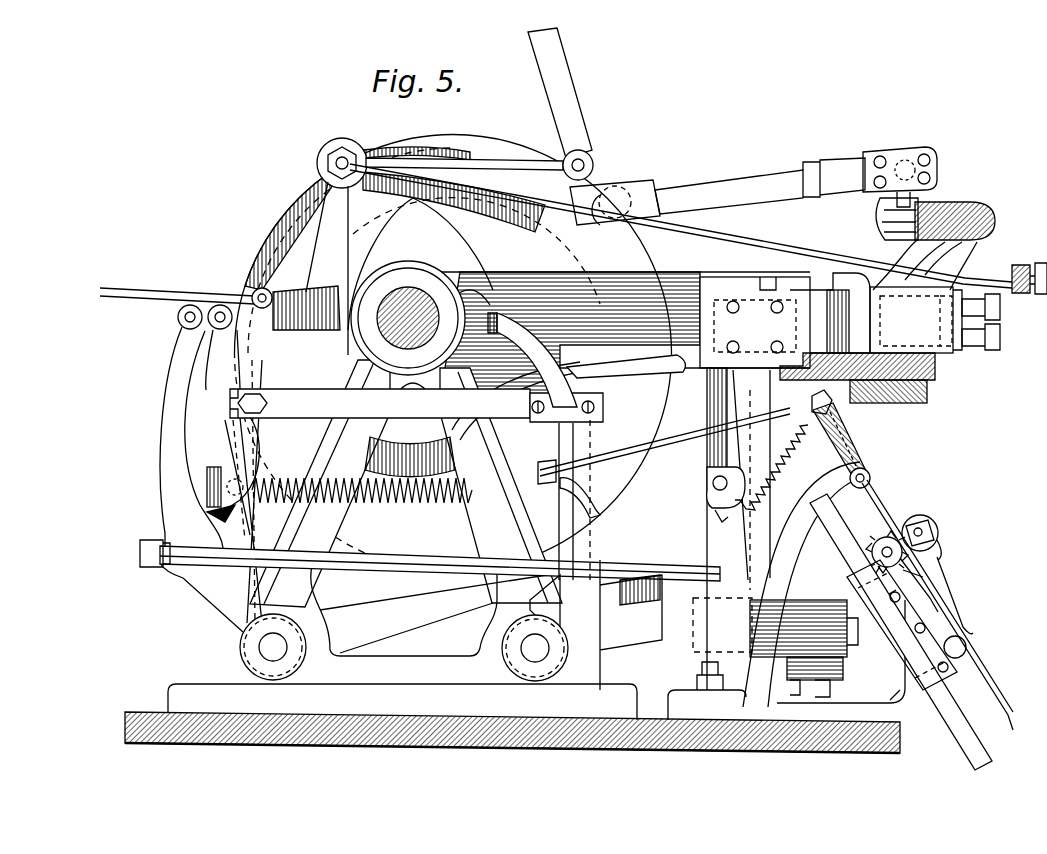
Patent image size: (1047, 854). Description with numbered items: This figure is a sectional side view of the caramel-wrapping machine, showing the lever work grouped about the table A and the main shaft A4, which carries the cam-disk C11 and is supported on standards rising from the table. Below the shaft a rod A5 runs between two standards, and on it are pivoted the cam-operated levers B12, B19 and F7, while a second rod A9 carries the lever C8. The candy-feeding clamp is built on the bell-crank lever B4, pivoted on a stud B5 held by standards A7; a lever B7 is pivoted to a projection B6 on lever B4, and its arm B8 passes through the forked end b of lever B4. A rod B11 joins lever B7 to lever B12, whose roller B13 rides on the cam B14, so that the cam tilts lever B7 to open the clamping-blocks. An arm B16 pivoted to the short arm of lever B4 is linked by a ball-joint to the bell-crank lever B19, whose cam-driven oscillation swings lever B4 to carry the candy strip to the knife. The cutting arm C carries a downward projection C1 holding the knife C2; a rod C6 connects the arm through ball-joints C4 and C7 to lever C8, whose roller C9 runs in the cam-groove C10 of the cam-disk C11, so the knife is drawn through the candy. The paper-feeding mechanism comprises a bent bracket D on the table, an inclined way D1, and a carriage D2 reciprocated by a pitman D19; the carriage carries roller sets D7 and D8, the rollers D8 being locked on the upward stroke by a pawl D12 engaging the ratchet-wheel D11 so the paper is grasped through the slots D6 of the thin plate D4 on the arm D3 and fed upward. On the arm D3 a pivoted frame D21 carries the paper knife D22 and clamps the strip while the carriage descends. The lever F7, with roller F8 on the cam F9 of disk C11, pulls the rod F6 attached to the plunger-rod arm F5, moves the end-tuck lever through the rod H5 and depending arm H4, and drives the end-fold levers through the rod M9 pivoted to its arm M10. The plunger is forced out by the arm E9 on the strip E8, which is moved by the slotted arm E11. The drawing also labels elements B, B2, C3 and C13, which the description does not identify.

The table A is at (888, 748).
The main shaft A4 is at (396, 302).
The rod A5 is at (265, 650).
The standards A7 is at (841, 684).
The rod A9 is at (532, 652).
The block B is at (930, 398).
The plate B2 is at (937, 372).
The lever B4 is at (764, 382).
The stud B5 is at (655, 662).
The projection B6 is at (710, 485).
The lever B7 is at (700, 380).
The arm B8 is at (838, 286).
The rod B11 is at (382, 574).
The lever B12 is at (165, 464).
The roller B13 is at (178, 319).
The cam B14 is at (185, 348).
The arm B16 is at (714, 342).
The lever B19 is at (426, 628).
The forked end b is at (770, 278).
The arm C is at (952, 210).
The downward projection C1 is at (966, 290).
The knife C2 is at (911, 320).
The screw C3 is at (1000, 308).
The ball-joint C4 is at (905, 163).
The rod C6 is at (755, 184).
The ball-joint C7 is at (628, 200).
The lever C8 is at (602, 257).
The roller C9 is at (622, 294).
The cam-groove C10 is at (312, 198).
The cam-disk C11 is at (477, 154).
The screw C13 is at (1000, 342).
The bracket D is at (893, 702).
The way D1 is at (946, 722).
The carriage D2 is at (924, 640).
The arm D3 is at (790, 518).
The plate D4 is at (948, 690).
The slots D6 is at (948, 604).
The rollers D7 is at (914, 522).
The rollers D8 is at (870, 553).
The ratchet-wheel D11 is at (880, 540).
The pawl D12 is at (918, 567).
The pitman D19 is at (926, 584).
The frame D21 is at (842, 440).
The knife D22 is at (812, 402).
The strip E8 is at (416, 405).
The arm E9 is at (562, 364).
The arm E11 is at (240, 464).
The arm F5 is at (1029, 268).
The rod F6 is at (776, 244).
The lever F7 is at (344, 254).
The roller F8 is at (386, 264).
The cam F9 is at (399, 221).
The depending arm H4 is at (572, 124).
The rod H5 is at (512, 158).
The rod M9 is at (213, 294).
The arm M10 is at (348, 308).